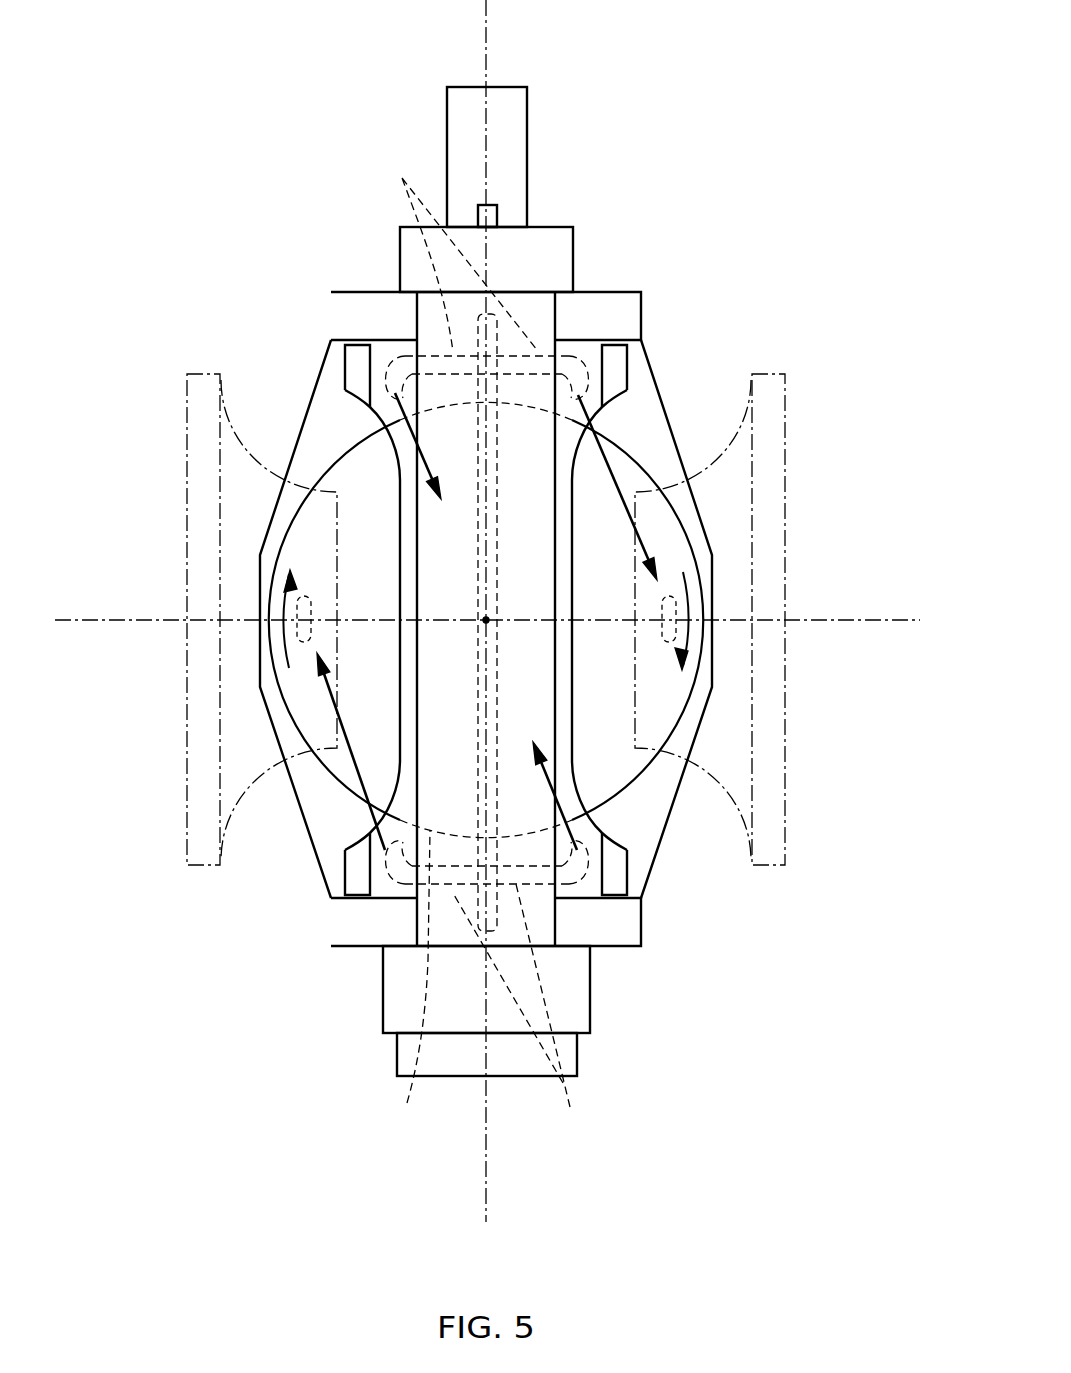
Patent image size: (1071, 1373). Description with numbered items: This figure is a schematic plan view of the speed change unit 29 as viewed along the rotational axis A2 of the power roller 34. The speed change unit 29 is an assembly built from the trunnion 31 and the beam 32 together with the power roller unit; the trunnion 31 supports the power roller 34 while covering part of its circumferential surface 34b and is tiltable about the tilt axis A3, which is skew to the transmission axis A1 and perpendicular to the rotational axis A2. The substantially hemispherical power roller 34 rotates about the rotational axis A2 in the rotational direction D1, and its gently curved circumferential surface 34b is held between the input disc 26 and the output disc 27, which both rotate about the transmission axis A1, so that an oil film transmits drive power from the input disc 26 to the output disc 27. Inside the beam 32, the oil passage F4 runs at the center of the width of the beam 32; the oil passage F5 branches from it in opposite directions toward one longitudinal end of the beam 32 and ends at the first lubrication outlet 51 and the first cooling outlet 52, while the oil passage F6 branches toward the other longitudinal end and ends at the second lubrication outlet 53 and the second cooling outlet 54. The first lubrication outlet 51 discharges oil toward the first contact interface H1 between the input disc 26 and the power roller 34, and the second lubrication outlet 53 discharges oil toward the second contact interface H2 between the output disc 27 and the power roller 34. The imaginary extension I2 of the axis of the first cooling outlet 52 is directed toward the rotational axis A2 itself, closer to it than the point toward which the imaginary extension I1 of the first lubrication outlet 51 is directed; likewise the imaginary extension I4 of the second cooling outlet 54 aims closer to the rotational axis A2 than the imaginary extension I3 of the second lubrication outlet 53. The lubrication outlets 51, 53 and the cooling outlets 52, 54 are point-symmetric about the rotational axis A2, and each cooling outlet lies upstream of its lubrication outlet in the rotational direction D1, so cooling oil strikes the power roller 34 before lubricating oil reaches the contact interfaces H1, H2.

The speed change unit 29 is at (679, 94).
The trunnion 31 is at (663, 339).
The beam 32 is at (528, 307).
The power roller 34 is at (688, 504).
The circumferential surface 34b is at (600, 711).
The first lubrication outlet 51 is at (575, 407).
The first cooling outlet 52 is at (415, 410).
The second lubrication outlet 53 is at (397, 882).
The second cooling outlet 54 is at (590, 883).
The input disc 26 is at (786, 413).
The output disc 27 is at (187, 413).
The transmission axis A1 is at (848, 620).
The rotational axis A2 is at (488, 617).
The tilt axis A3 is at (492, 47).
The rotational direction D1 is at (286, 628).
The first contact interface H1 is at (710, 583).
The second contact interface H2 is at (296, 612).
The imaginary extension of the axis of the first lubrication outlet I1 is at (600, 435).
The imaginary extension of the axis of the first cooling outlet I2 is at (420, 465).
The imaginary extension of the axis of the second lubrication outlet I3 is at (361, 780).
The imaginary extension of the axis of the second cooling outlet I4 is at (552, 775).
The oil passage F4 is at (408, 992).
The oil passage F5 is at (463, 246).
The oil passage F6 is at (519, 1017).